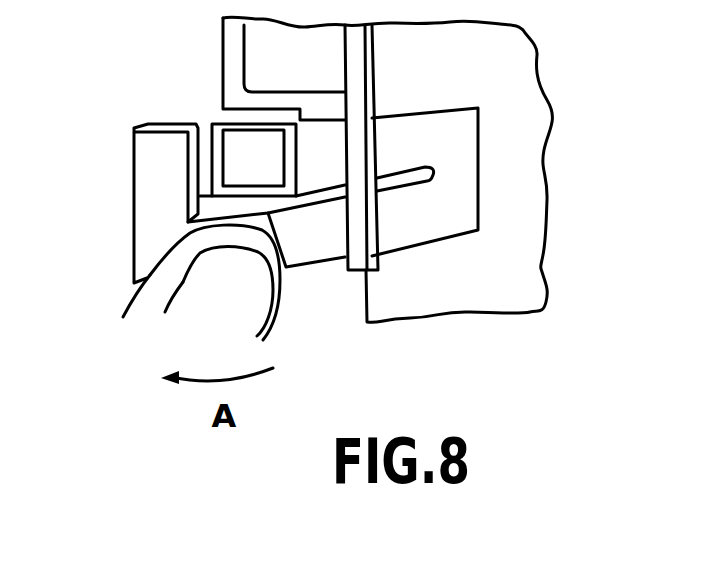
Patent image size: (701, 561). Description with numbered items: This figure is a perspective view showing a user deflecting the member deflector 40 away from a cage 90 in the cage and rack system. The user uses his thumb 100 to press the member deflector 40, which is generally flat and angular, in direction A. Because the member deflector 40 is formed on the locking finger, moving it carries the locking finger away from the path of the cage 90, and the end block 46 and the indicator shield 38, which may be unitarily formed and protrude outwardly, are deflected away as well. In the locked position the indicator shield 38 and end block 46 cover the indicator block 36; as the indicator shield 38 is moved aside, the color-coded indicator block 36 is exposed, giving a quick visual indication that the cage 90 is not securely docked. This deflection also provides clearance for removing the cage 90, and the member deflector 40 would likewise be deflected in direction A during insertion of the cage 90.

The indicator block 36 is at (235, 132).
The indicator shield 38 is at (152, 152).
The member deflector 40 is at (275, 228).
The end block 46 is at (170, 319).
The cage 90 is at (533, 280).
The thumb 100 is at (172, 295).